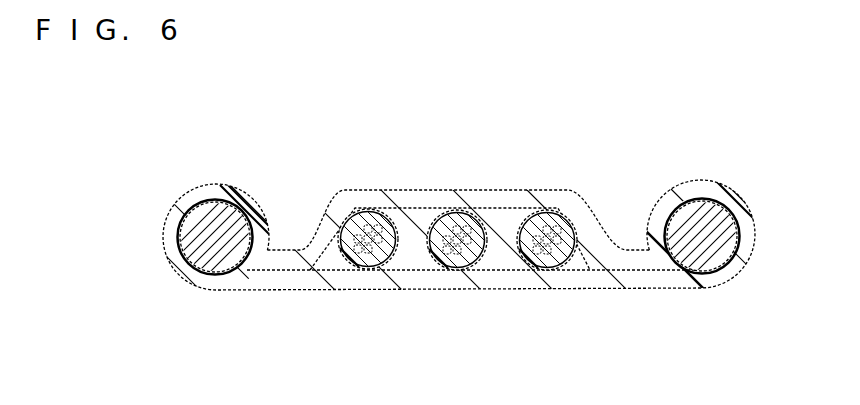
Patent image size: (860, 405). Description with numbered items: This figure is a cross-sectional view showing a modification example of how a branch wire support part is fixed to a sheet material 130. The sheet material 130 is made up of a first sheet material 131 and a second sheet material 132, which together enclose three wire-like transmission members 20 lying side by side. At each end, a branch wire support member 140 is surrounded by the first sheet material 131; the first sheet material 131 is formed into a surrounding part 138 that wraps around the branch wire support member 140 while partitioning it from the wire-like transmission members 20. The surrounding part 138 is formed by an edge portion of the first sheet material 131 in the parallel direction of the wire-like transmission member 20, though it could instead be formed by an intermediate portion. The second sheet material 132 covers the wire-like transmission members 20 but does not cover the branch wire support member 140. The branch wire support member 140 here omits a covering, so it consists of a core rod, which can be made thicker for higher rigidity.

The wire-like transmission member 20 is at (413, 272).
The sheet material 130 is at (464, 257).
The first sheet material 131 is at (338, 280).
The second sheet material 132 is at (456, 191).
The surrounding part 138 is at (248, 193).
The branch wire support member 140 is at (214, 220).